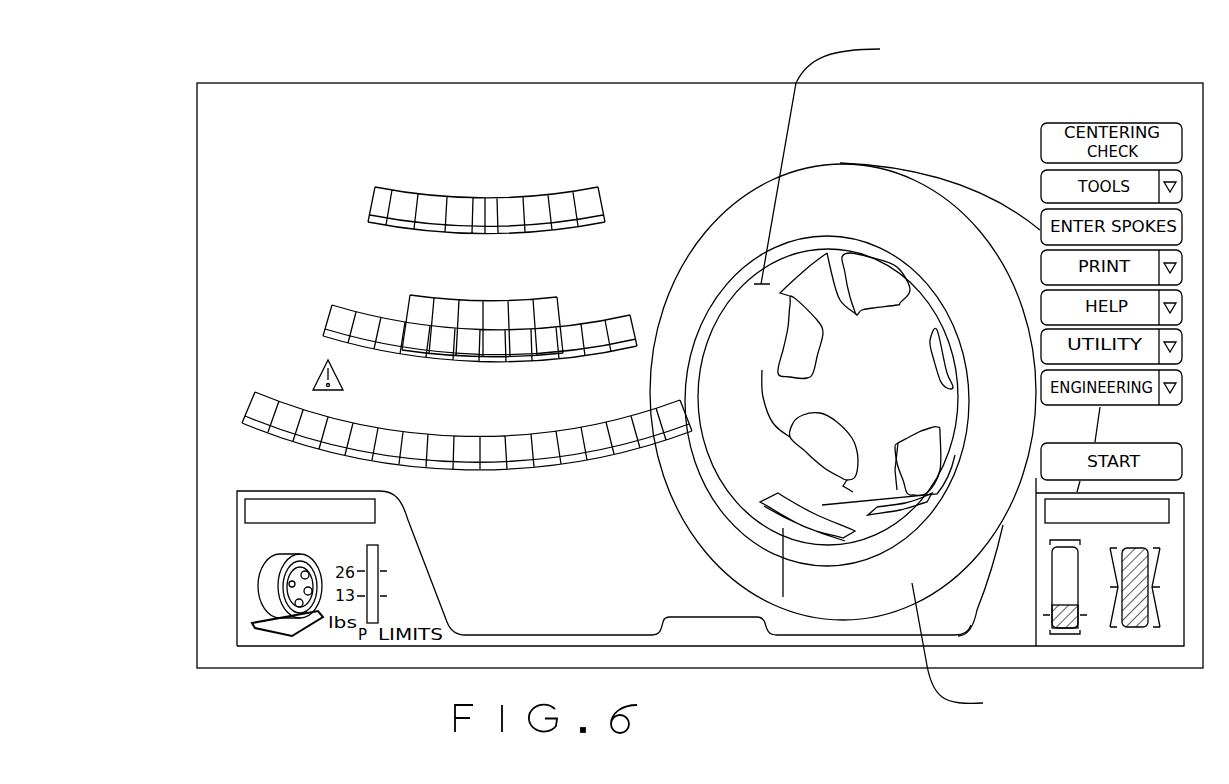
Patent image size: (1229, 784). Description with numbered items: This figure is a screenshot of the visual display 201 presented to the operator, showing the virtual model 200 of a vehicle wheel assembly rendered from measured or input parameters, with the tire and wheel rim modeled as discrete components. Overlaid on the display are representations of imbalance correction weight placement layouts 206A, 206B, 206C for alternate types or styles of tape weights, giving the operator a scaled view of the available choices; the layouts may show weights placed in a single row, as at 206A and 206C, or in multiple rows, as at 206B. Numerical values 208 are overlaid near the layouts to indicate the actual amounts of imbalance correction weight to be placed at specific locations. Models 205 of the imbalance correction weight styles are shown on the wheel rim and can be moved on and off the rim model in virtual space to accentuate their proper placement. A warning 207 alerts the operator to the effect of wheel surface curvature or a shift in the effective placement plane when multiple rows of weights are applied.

The virtual model 200 is at (735, 178).
The visual display 201 is at (1095, 78).
The models of imbalance correction weight styles 205 is at (824, 523).
The imbalance correction weight placement representation 206A is at (598, 184).
The imbalance correction weight placement representation 206B is at (568, 300).
The imbalance correction weight placement representation 206C is at (528, 476).
The warning 207 is at (388, 394).
The numerical values 208 is at (486, 157).